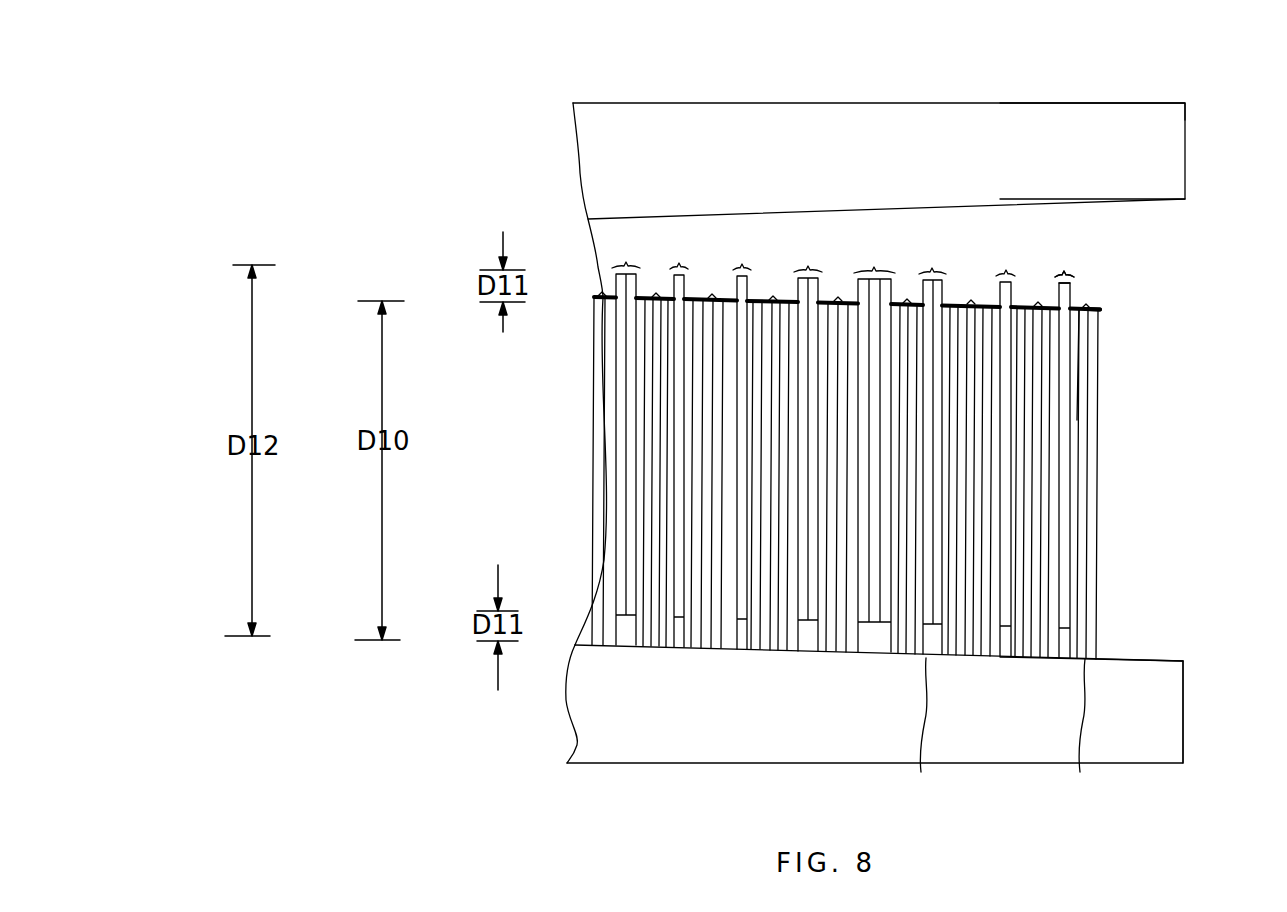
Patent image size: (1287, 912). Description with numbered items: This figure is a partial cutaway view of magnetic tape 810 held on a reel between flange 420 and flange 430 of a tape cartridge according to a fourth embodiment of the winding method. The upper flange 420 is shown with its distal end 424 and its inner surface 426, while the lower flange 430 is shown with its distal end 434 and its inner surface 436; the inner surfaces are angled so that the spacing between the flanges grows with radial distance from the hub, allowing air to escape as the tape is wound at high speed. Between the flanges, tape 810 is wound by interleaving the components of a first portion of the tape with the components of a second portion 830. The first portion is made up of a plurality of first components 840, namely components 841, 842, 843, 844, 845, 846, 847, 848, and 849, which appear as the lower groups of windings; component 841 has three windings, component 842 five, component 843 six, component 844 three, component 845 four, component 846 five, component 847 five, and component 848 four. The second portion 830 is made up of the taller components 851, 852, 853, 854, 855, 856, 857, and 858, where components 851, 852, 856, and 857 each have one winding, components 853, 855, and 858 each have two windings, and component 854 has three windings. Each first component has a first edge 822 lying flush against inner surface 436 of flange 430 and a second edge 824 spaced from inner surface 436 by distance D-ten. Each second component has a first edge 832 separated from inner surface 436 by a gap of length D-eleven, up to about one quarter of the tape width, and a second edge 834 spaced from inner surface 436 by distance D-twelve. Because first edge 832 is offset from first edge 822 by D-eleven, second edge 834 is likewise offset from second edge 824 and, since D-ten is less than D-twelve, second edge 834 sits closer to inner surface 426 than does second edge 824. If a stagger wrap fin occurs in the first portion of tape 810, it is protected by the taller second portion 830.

The flange 420 is at (580, 148).
The distal end of flange 424 is at (1185, 140).
The inner surface of flange 426 is at (1160, 200).
The flange 430 is at (768, 748).
The distal end of flange 434 is at (1183, 704).
The inner surface of flange 436 is at (1135, 660).
The tape 810 is at (1100, 472).
The first edge 822 is at (1106, 730).
The second edge 824 is at (1102, 314).
The second portion 830 is at (1076, 290).
The first edge 832 is at (617, 298).
The second edge 834 is at (1068, 280).
The plurality of first components 840 is at (1098, 340).
The component 841 is at (1088, 304).
The component 842 is at (1038, 303).
The component 843 is at (971, 301).
The component 844 is at (908, 300).
The component 845 is at (838, 298).
The component 846 is at (773, 297).
The component 847 is at (712, 295).
The component 848 is at (656, 294).
The component 849 is at (599, 296).
The component 851 is at (1062, 285).
The component 852 is at (1006, 270).
The component 853 is at (932, 268).
The component 854 is at (874, 267).
The component 855 is at (808, 266).
The component 856 is at (742, 264).
The component 857 is at (681, 262).
The component 858 is at (628, 262).